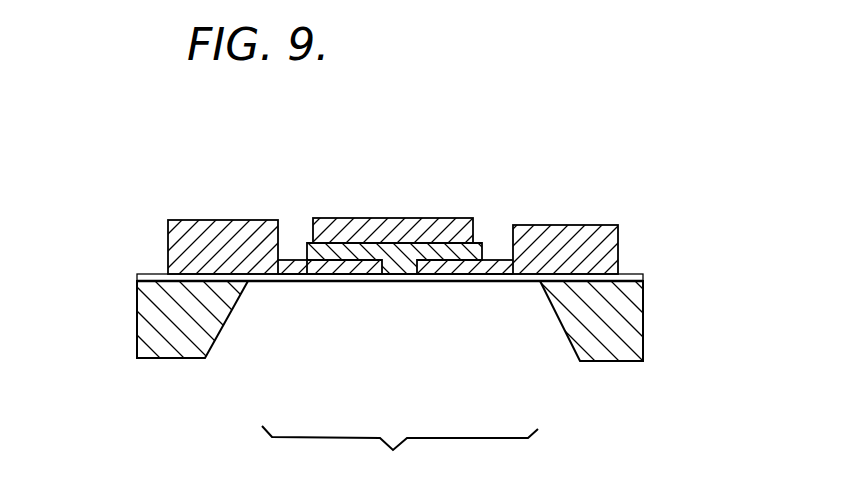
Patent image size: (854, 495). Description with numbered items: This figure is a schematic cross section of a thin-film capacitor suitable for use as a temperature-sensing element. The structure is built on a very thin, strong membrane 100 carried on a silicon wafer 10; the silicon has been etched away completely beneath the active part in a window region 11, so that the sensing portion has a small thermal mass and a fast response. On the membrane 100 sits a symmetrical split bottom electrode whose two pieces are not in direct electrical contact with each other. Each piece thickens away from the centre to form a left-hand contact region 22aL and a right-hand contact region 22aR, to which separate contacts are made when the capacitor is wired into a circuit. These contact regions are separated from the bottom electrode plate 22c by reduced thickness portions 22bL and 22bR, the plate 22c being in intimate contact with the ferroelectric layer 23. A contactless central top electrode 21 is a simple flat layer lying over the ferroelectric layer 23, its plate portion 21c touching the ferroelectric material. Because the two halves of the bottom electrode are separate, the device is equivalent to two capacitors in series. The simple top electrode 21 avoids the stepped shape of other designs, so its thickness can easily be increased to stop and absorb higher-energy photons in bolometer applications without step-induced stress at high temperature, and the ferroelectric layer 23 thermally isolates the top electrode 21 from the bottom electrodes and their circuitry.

The silicon wafer 10 is at (140, 332).
The membrane 100 is at (632, 275).
The left-hand contact region 22aL is at (190, 220).
The left reduced thickness portion 22bL is at (290, 260).
The bottom electrode plate 22c is at (333, 283).
The right reduced thickness portion 22bR is at (497, 262).
The top electrode plate 21c is at (340, 218).
The top electrode 21 is at (376, 218).
The right-hand contact region 22aR is at (558, 225).
The ferroelectric layer 23 is at (399, 283).
The window region 11 is at (400, 456).